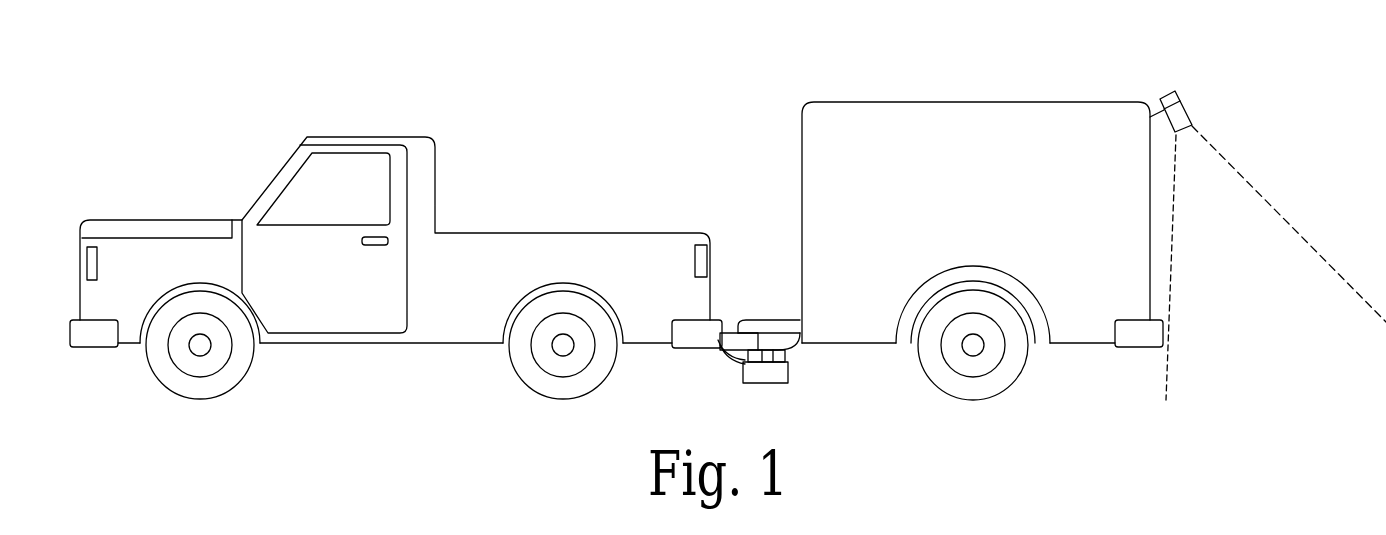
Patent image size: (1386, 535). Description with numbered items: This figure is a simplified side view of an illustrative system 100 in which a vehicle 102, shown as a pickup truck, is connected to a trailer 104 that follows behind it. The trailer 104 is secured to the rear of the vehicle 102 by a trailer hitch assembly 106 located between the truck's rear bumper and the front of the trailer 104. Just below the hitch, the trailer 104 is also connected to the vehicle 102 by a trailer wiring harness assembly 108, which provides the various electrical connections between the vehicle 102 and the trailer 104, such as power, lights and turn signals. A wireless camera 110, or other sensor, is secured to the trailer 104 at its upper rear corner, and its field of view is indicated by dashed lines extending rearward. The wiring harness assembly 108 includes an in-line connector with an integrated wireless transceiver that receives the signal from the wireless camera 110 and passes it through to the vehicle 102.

The system 100 is at (158, 126).
The vehicle 102 is at (348, 136).
The trailer 104 is at (868, 101).
The trailer hitch assembly 106 is at (748, 318).
The trailer wiring harness assembly 108 is at (736, 386).
The wireless camera 110 is at (1175, 91).